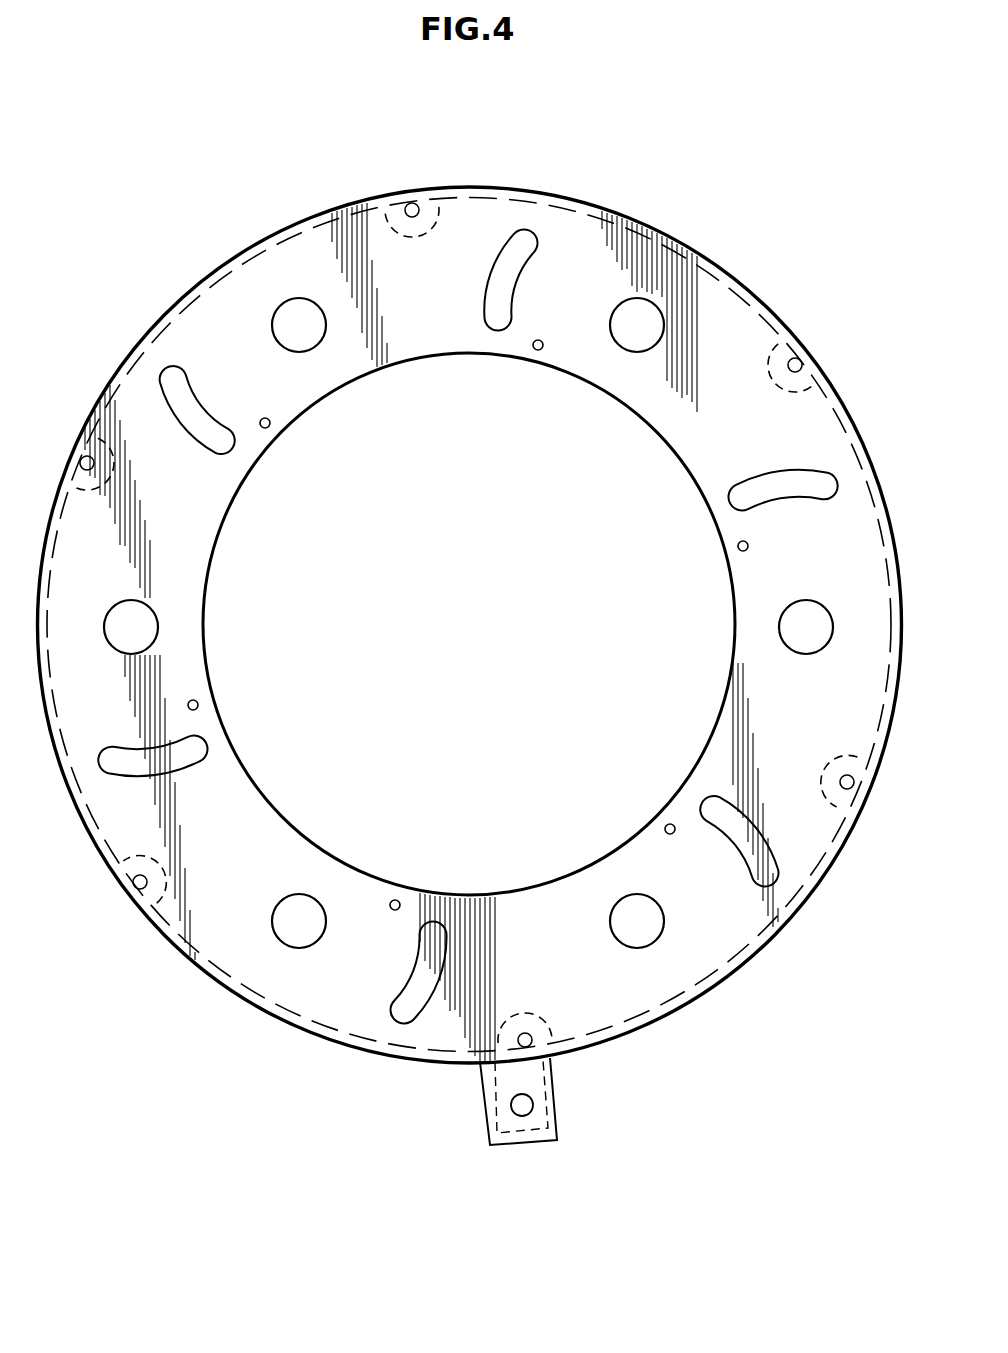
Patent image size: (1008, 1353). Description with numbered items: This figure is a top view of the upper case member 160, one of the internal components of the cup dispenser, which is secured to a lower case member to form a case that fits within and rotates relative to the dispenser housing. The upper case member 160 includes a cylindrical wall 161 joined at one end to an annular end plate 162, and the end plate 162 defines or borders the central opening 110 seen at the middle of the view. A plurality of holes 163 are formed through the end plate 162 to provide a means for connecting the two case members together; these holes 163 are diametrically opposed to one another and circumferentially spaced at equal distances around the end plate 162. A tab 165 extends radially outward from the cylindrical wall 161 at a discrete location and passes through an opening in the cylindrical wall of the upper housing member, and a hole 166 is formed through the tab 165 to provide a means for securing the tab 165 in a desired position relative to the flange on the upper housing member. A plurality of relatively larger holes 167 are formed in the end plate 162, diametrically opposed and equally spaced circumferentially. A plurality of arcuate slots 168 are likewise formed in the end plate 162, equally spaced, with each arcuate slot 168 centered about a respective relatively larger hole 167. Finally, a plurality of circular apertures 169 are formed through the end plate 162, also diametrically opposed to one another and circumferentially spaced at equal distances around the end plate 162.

The upper case member 160 is at (591, 142).
The cylindrical wall 161 is at (663, 232).
The annular end plate 162 is at (735, 298).
The holes 163 is at (85, 460).
The tab 165 is at (551, 1133).
The hole 166 is at (527, 1103).
The relatively larger holes 167 is at (811, 620).
The arcuate slots 168 is at (776, 486).
The circular apertures 169 is at (739, 548).
The central opening 110 is at (478, 606).